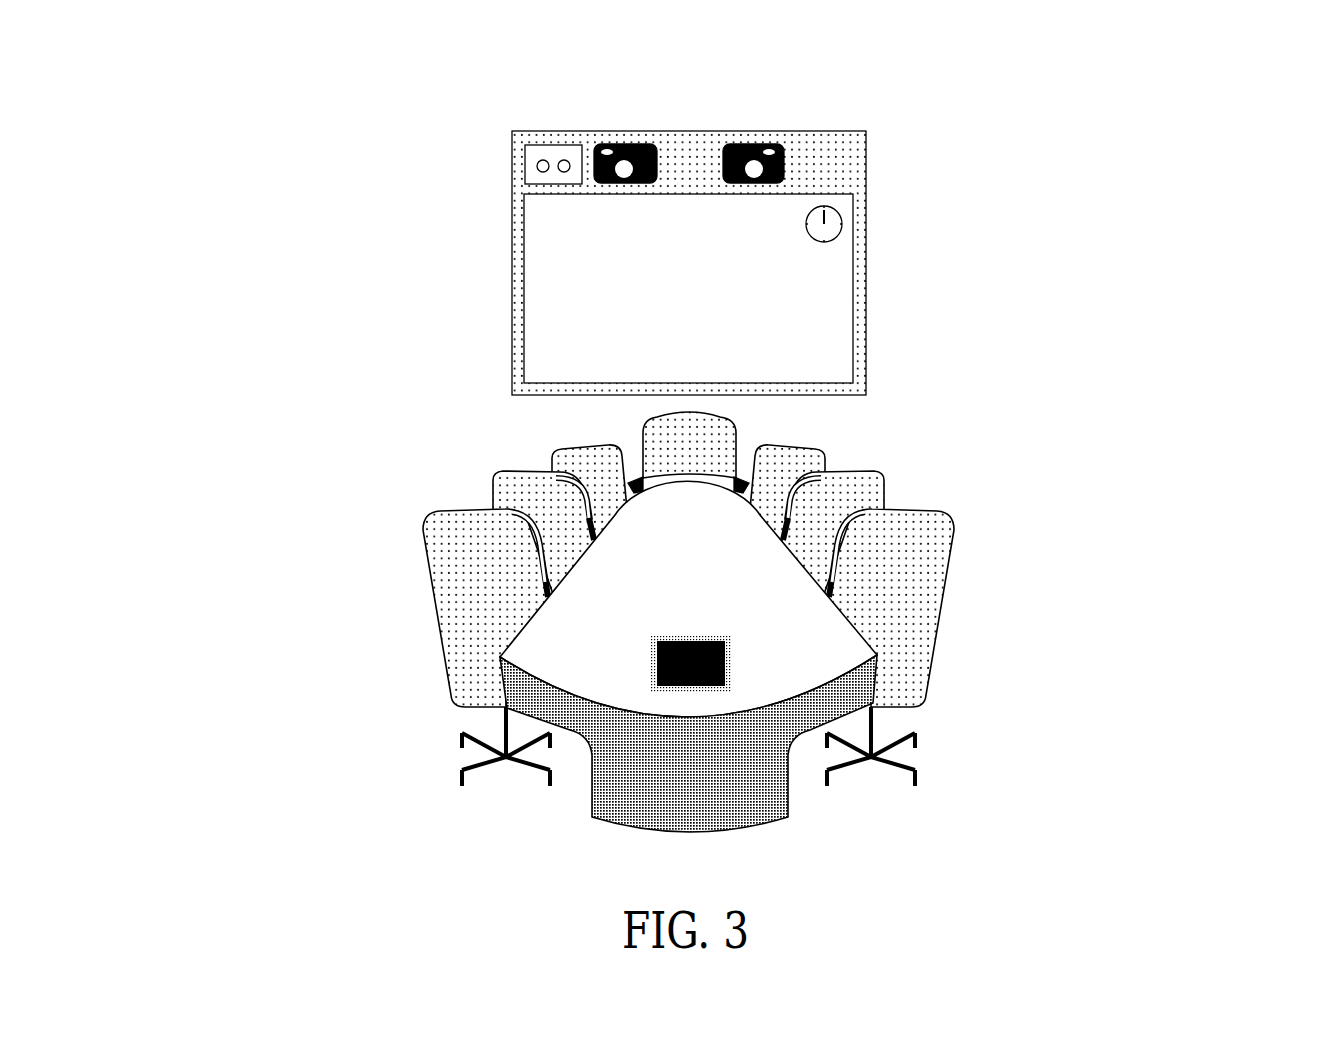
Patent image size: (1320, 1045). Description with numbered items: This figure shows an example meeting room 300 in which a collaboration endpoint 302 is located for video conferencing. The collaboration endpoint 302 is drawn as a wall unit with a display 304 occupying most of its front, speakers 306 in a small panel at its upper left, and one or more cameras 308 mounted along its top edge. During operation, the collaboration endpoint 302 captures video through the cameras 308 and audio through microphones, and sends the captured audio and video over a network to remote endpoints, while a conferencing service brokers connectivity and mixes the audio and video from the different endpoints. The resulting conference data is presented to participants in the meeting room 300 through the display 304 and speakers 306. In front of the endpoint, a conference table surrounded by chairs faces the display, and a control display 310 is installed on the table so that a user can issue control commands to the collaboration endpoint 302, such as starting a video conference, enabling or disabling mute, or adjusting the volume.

The meeting room 300 is at (1230, 102).
The collaboration endpoint 302 is at (938, 96).
The display 304 is at (540, 295).
The speakers 306 is at (525, 160).
The cameras 308 is at (752, 147).
The control display 310 is at (728, 633).